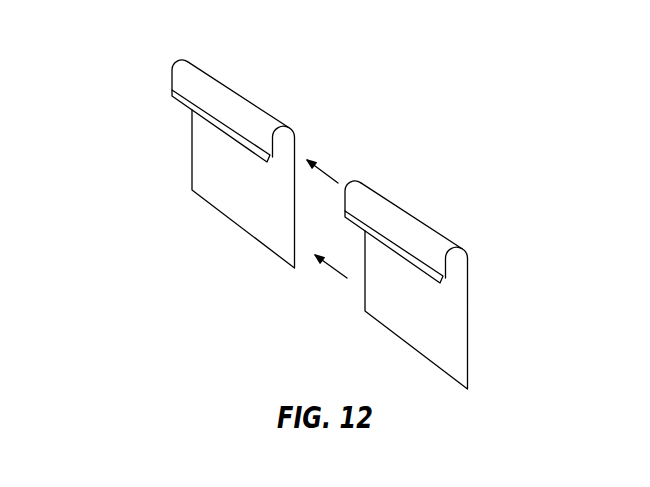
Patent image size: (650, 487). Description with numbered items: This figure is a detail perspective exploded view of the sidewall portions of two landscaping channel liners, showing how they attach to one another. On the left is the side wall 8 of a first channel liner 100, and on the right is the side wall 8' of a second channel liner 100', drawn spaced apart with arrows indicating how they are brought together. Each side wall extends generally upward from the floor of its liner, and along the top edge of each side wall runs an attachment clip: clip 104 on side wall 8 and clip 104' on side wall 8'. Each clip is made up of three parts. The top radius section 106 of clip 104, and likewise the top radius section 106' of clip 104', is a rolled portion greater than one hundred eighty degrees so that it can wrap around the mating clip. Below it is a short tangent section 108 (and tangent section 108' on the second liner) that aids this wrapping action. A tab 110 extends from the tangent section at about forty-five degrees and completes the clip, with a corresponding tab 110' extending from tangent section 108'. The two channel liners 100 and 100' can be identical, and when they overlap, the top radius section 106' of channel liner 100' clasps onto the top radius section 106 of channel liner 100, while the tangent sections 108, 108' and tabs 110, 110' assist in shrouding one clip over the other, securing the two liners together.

The side wall 8 is at (234, 189).
The landscaping channel liner 100 is at (237, 180).
The attachment clip 104 is at (261, 99).
The top radius section 106 is at (260, 95).
The tangent section 108 is at (233, 99).
The tab 110 is at (197, 126).
The side wall 8' is at (406, 310).
The landscaping channel liner 100' is at (468, 271).
The attachment clip 104' is at (433, 215).
The top radius section 106' is at (412, 200).
The tangent section 108' is at (428, 229).
The tab 110' is at (444, 263).